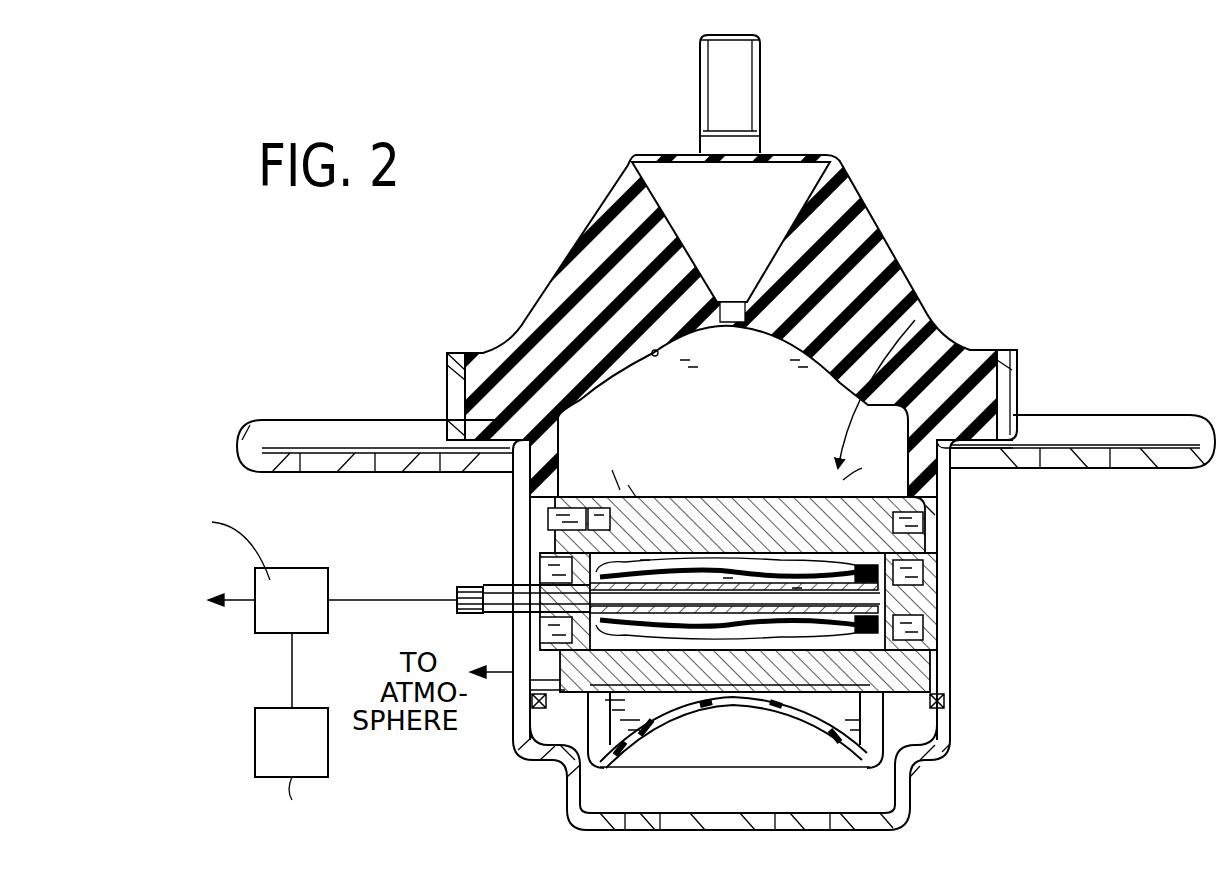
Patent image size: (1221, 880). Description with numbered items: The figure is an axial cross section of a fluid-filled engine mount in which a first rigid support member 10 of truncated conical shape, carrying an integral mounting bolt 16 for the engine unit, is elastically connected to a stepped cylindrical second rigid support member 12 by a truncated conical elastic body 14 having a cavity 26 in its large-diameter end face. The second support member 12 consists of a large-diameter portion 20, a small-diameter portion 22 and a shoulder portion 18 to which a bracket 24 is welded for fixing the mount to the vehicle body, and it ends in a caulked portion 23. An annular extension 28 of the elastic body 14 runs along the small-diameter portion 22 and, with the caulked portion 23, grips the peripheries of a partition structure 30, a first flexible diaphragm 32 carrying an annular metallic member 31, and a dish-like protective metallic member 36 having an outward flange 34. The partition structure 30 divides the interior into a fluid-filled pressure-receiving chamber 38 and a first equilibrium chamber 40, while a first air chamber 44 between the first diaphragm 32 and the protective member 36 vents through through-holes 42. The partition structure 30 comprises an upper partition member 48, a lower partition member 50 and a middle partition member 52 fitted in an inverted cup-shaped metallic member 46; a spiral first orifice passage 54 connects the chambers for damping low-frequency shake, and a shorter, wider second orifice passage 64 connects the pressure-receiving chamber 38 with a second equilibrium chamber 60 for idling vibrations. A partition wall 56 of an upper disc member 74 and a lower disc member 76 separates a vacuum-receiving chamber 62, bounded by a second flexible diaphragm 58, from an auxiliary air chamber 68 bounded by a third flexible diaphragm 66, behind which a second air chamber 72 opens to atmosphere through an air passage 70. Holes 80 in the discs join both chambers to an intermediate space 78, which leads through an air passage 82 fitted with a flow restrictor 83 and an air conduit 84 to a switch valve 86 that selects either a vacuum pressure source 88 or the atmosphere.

The first rigid support member 10 is at (795, 133).
The second rigid support member 12 is at (960, 582).
The elastic body 14 is at (905, 256).
The mounting bolt 16 is at (728, 76).
The shoulder portion 18 is at (482, 354).
The large-diameter portion 20 is at (1010, 387).
The small-diameter portion 22 is at (945, 528).
The caulked portion 23 is at (928, 770).
The bracket 24 is at (1160, 456).
The cavity 26 is at (653, 352).
The annular extension 28 is at (528, 502).
The partition structure 30 is at (915, 320).
The annular metallic member 31 is at (947, 702).
The first flexible diaphragm 32 is at (693, 813).
The outward flange 34 is at (520, 762).
The protective metallic member 36 is at (762, 813).
The pressure-receiving chamber 38 is at (748, 372).
The first variable-volume equilibrium chamber 40 is at (580, 780).
The through-holes 42 is at (650, 830).
The first air chamber 44 is at (727, 800).
The cup-shaped metallic member 46 is at (562, 546).
The upper partition member 48 is at (617, 480).
The lower partition member 50 is at (556, 745).
The middle partition member 52 is at (790, 712).
The first orifice passage 54 is at (942, 552).
The partition wall 56 is at (1015, 600).
The second flexible diaphragm 58 is at (892, 472).
The second equilibrium chamber 60 is at (633, 495).
The vacuum-receiving chamber 62 is at (757, 560).
The second orifice passage 64 is at (703, 545).
The third flexible diaphragm 66 is at (768, 705).
The auxiliary air chamber 68 is at (672, 720).
The air passage 70 is at (532, 703).
The second air chamber 72 is at (560, 772).
The upper disc member 74 is at (940, 598).
The lower disc member 76 is at (940, 648).
The intermediate space 78 is at (940, 520).
The holes 80 is at (645, 562).
The air passage 82 is at (470, 588).
The flow restrictor 83 is at (463, 611).
The air conduit 84 is at (345, 585).
The switch valve 86 is at (308, 575).
The vacuum pressure source 88 is at (318, 713).